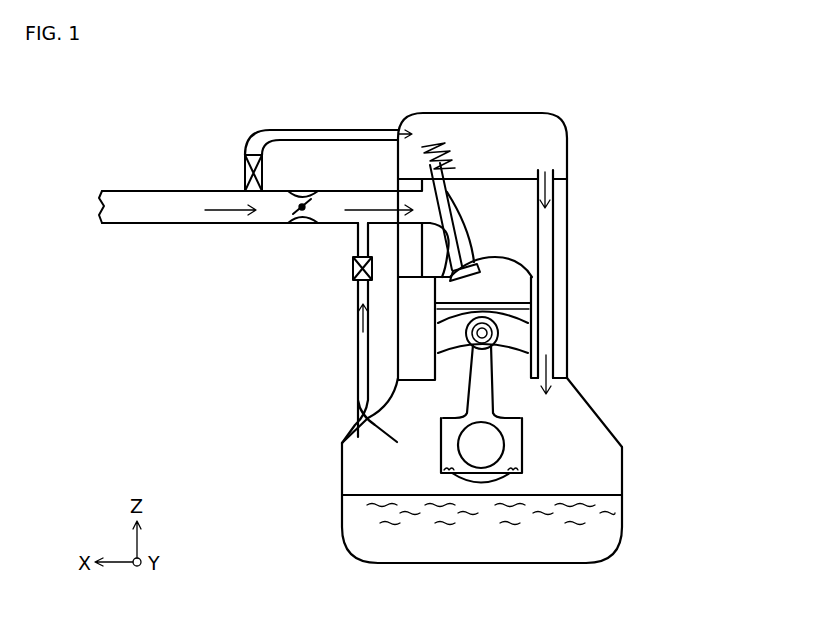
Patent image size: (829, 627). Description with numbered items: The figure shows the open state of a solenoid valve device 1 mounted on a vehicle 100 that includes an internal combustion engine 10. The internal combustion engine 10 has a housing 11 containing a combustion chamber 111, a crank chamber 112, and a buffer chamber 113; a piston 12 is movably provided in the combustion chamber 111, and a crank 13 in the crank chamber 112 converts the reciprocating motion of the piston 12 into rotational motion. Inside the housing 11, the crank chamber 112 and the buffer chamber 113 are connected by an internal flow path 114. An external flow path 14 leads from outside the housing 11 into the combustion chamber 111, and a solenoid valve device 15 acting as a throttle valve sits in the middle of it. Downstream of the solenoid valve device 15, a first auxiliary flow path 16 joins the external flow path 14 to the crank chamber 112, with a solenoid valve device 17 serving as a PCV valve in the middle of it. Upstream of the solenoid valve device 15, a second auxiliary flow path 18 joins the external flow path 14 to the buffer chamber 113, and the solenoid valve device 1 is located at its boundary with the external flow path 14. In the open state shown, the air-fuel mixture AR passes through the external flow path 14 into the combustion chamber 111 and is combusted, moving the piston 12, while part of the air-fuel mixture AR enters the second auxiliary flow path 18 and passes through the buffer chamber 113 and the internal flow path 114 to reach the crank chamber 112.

The vehicle 100 is at (692, 82).
The internal combustion engine 10 is at (640, 157).
The housing 11 is at (586, 403).
The piston 12 is at (533, 330).
The crank 13 is at (527, 430).
The external flow path 14 is at (152, 191).
The solenoid valve device 15 is at (295, 225).
The first auxiliary flow path 16 is at (356, 378).
The solenoid valve device 17 is at (350, 270).
The second auxiliary flow path 18 is at (338, 130).
The solenoid valve device 1 is at (243, 152).
The combustion chamber 111 is at (510, 287).
The crank chamber 112 is at (594, 470).
The buffer chamber 113 is at (537, 139).
The internal flow path 114 is at (553, 226).
The air-fuel mixture AR is at (393, 128).